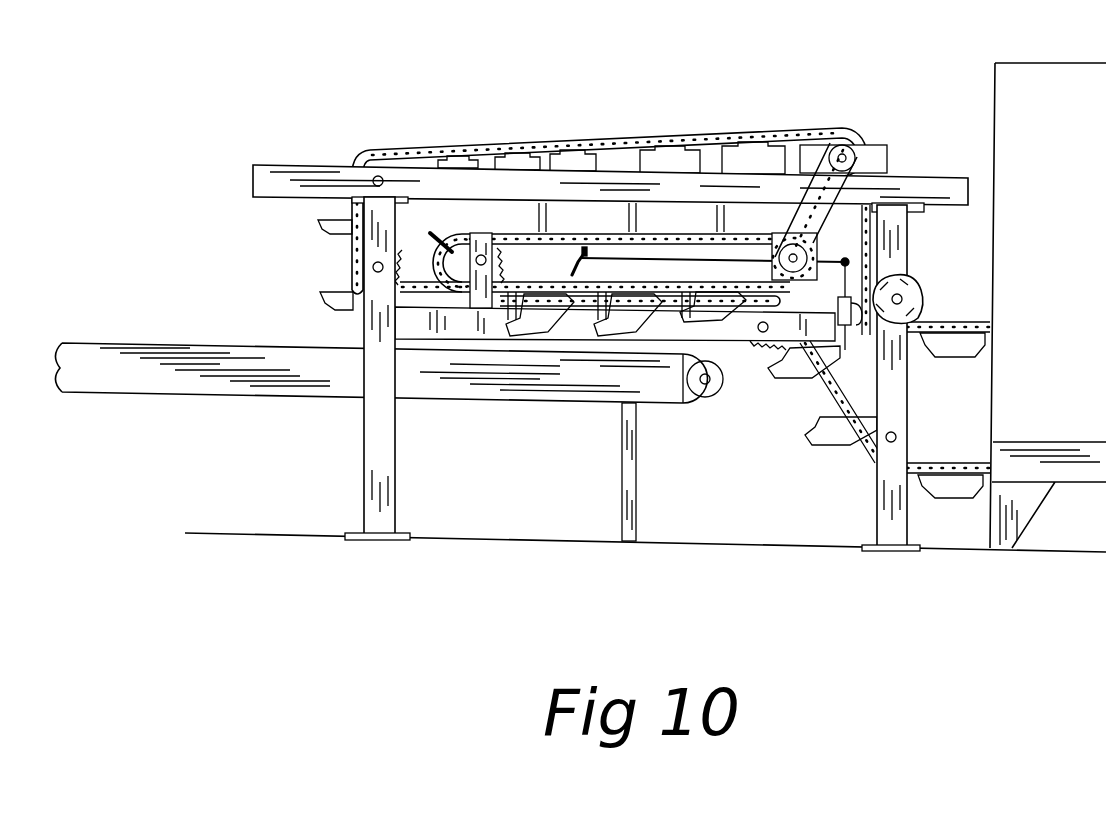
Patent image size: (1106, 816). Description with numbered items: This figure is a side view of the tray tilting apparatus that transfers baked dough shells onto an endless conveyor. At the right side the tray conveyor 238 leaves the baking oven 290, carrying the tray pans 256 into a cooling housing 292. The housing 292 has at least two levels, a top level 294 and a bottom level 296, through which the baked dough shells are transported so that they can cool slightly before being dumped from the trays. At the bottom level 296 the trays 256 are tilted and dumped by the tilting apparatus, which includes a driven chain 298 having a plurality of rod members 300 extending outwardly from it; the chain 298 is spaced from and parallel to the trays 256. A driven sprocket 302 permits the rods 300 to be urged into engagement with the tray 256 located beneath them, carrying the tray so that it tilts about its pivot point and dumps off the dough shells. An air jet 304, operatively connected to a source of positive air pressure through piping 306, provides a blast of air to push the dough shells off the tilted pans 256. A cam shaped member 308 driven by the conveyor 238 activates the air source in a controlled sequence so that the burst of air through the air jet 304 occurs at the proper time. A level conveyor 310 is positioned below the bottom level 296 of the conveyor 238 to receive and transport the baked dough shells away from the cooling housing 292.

The tray conveyor 238 is at (935, 324).
The tray pan 256 is at (950, 360).
The baking oven 290 is at (1030, 63).
The cooling housing 292 is at (911, 177).
The top level 294 is at (490, 148).
The bottom level 296 is at (444, 289).
The driven chain 298 is at (573, 238).
The rod member 300 is at (535, 219).
The driven sprocket 302 is at (355, 268).
The air jet 304 is at (566, 272).
The piping 306 is at (662, 259).
The cam shaped member 308 is at (908, 282).
The level conveyor 310 is at (528, 400).